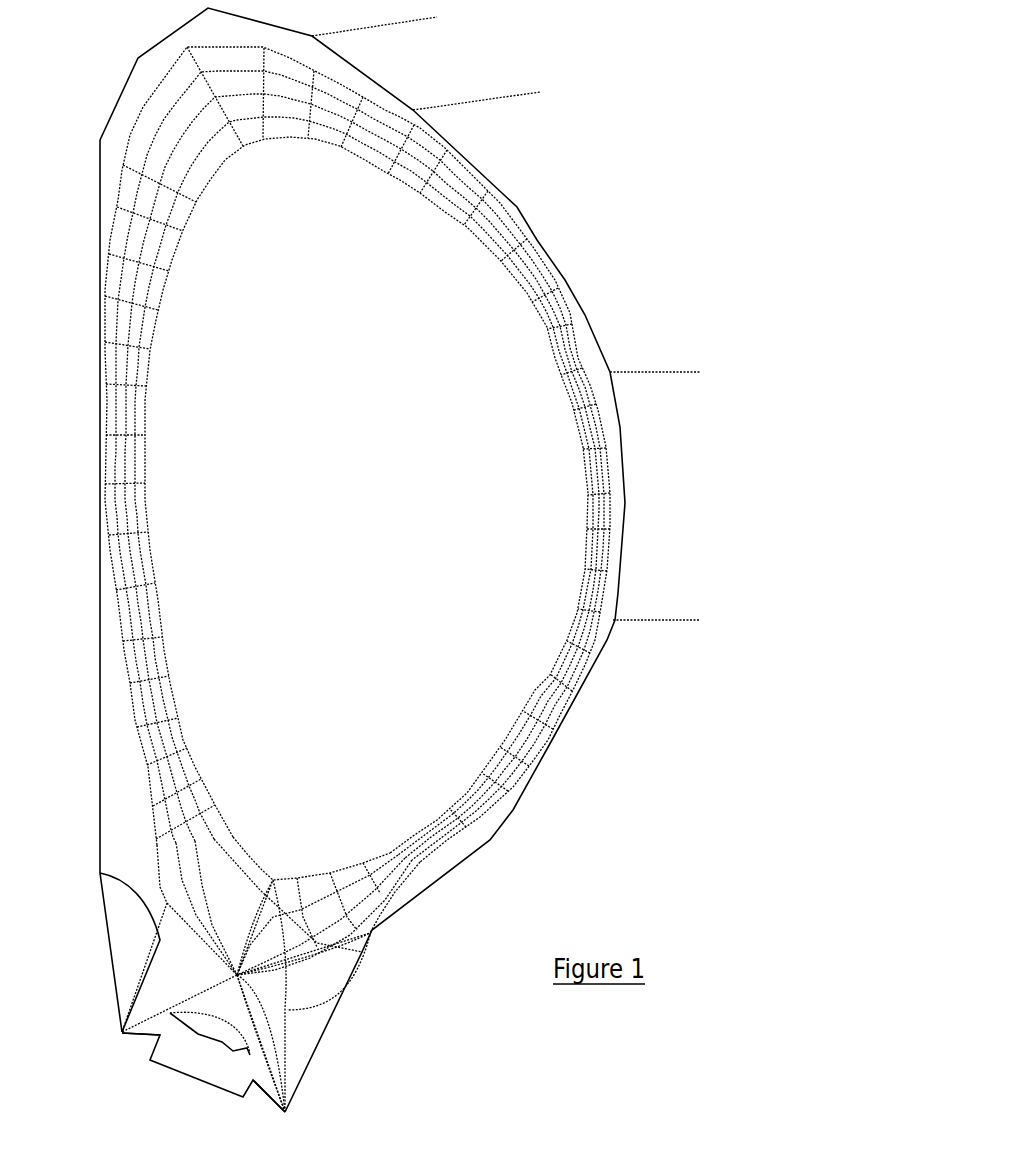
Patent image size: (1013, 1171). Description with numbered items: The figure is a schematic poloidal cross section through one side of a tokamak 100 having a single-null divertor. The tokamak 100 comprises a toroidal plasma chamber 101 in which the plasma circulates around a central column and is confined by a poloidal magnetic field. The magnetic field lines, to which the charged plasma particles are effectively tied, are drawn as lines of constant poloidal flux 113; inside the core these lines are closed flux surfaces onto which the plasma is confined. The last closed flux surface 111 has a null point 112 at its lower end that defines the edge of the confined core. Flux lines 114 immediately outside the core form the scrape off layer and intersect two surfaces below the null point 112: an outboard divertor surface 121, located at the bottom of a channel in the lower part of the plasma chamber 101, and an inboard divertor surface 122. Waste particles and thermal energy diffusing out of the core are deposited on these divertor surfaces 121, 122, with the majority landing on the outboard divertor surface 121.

The tokamak 100 is at (371, 560).
The toroidal plasma chamber 101 is at (517, 208).
The last closed flux surface 111 is at (287, 100).
The null point 112 is at (287, 1010).
The lines of constant poloidal flux 113 is at (210, 187).
The flux lines 114 is at (118, 185).
The outboard divertor surface 121 is at (285, 1112).
The inboard divertor surface 122 is at (121, 1032).